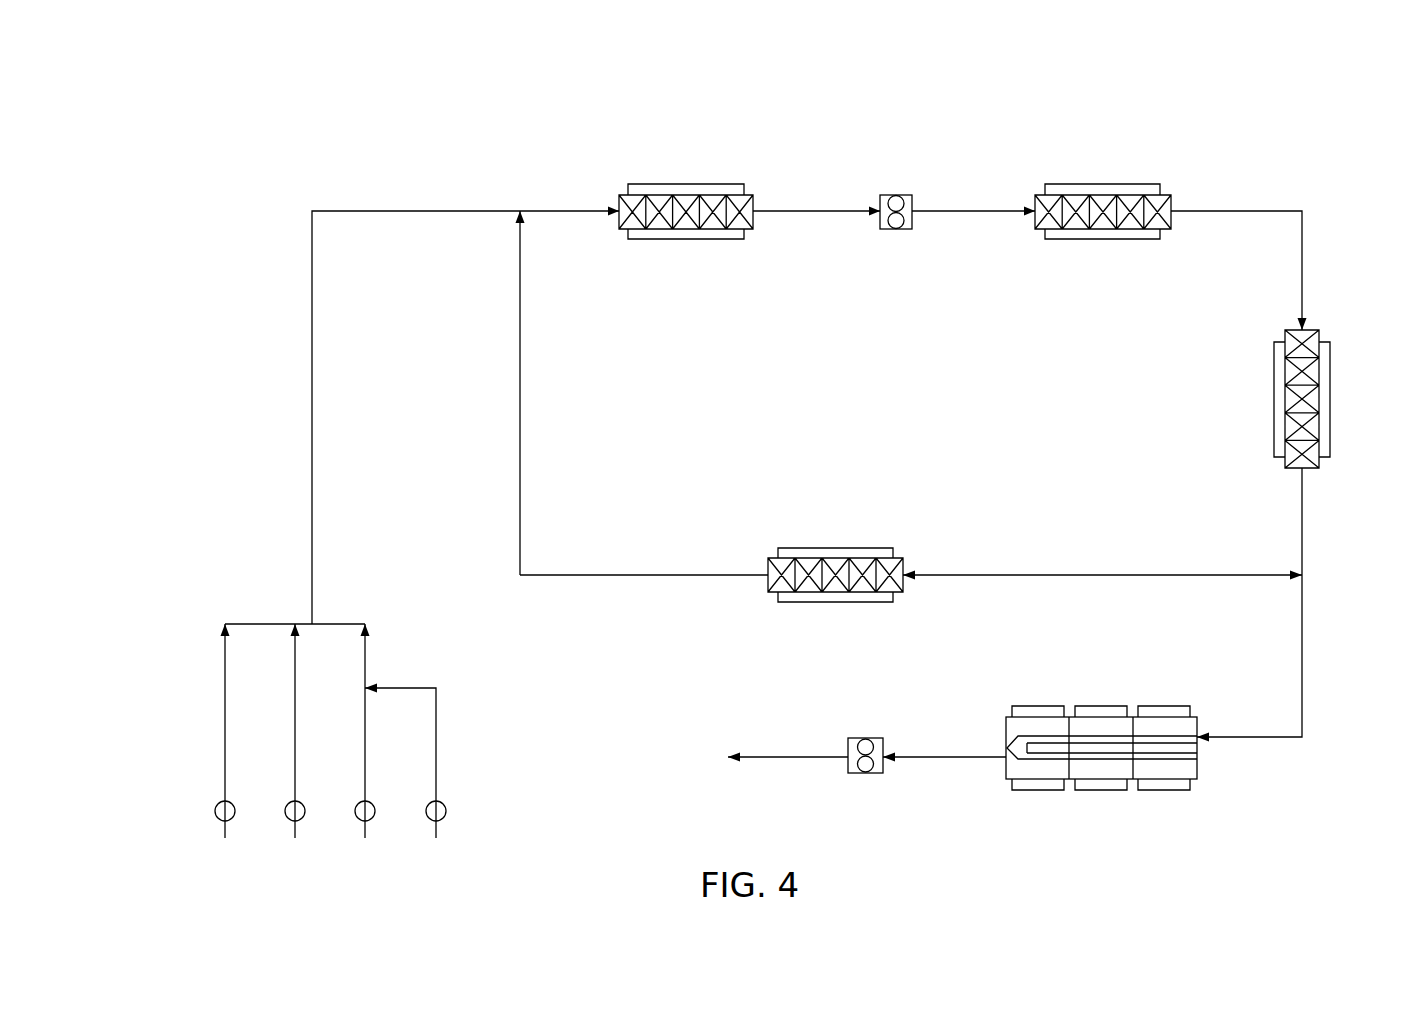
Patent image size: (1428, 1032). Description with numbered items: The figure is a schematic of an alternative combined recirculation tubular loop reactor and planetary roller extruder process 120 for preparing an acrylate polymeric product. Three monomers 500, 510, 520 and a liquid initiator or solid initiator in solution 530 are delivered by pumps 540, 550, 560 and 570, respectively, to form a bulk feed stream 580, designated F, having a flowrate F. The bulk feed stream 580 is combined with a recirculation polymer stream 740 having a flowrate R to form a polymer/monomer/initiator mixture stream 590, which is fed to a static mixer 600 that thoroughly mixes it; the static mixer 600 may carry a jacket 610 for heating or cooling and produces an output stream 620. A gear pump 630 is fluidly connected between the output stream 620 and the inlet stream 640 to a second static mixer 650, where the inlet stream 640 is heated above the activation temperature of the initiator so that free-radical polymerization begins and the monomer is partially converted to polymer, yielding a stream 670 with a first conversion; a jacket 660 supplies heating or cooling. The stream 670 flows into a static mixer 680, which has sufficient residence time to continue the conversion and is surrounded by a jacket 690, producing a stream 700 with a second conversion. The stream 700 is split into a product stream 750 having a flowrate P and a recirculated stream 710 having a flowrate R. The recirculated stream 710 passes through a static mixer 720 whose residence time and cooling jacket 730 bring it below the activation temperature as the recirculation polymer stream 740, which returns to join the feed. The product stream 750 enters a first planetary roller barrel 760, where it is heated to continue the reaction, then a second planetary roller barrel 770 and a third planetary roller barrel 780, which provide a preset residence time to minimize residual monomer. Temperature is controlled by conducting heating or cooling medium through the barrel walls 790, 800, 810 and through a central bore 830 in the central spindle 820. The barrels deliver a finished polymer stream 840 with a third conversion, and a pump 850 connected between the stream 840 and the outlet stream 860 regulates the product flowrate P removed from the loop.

The process 120 is at (222, 152).
The monomer 500 is at (365, 714).
The monomer 510 is at (295, 717).
The monomer 520 is at (225, 720).
The liquid initiator or solid initiator in solution 530 is at (436, 717).
The pump 540 is at (398, 792).
The pump 550 is at (328, 792).
The pump 560 is at (258, 792).
The pump 570 is at (470, 792).
The bulk feed stream 580 is at (312, 440).
The polymer/monomer/initiator mixture stream 590 is at (563, 211).
The static mixer 600 is at (686, 219).
The jacket 610 is at (690, 239).
The output stream 620 is at (809, 211).
The gear pump 630 is at (896, 195).
The inlet stream 640 is at (976, 211).
The static mixer 650 is at (1105, 219).
The jacket 660 is at (1100, 239).
The stream 670 is at (1263, 211).
The static mixer 680 is at (1304, 399).
The jacket 690 is at (1330, 436).
The stream 700 is at (1302, 528).
The recirculated stream 710 is at (1141, 575).
The static mixer 720 is at (835, 580).
The jacket 730 is at (835, 602).
The recirculation polymer stream 740 is at (690, 575).
The stream 750 is at (1338, 670).
The first planetary roller barrel 760 is at (1102, 777).
The second planetary roller barrel 770 is at (1103, 724).
The third planetary roller barrel 780 is at (1051, 824).
The barrel wall 790 is at (1184, 790).
The barrel wall 800 is at (1108, 790).
The barrel wall 810 is at (1025, 790).
The central spindle 820 is at (1044, 735).
The central bore 830 is at (1178, 710).
The finished polymer stream 840 is at (955, 757).
The pump 850 is at (865, 773).
The stream 860 is at (796, 757).